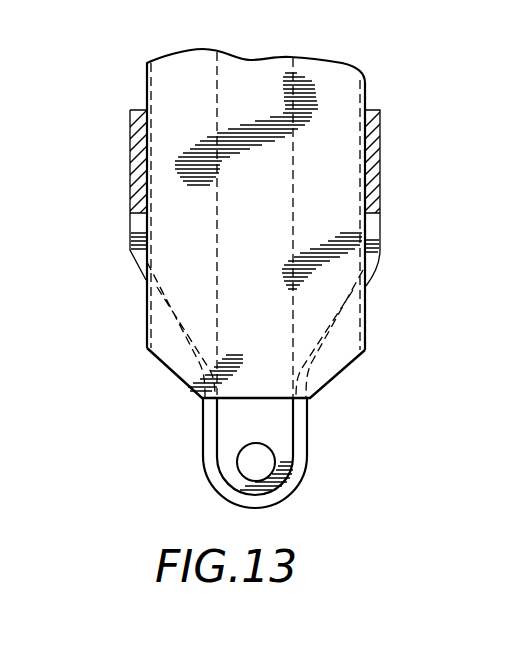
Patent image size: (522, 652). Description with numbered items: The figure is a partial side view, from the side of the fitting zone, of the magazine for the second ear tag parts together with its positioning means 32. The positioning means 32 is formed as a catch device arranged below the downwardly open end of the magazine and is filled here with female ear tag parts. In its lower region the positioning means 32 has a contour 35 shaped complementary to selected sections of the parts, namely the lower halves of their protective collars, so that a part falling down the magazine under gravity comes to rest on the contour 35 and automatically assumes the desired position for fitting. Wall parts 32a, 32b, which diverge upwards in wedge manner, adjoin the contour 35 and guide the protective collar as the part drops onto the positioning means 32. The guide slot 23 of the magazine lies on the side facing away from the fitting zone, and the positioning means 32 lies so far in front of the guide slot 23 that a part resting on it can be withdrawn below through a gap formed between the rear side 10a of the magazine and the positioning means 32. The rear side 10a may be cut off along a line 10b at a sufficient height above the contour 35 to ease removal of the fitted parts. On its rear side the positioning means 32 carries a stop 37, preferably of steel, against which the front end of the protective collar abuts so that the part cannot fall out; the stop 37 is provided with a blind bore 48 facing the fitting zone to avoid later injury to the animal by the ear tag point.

The rear side of the magazine 10a is at (163, 348).
The line 10b is at (280, 398).
The guide slot 23 is at (217, 113).
The positioning means 32 is at (313, 407).
The wall part 32a is at (387, 270).
The wall part 32b is at (143, 300).
The contour 35 is at (293, 490).
The stop 37 is at (237, 423).
The blind bore 48 is at (252, 459).